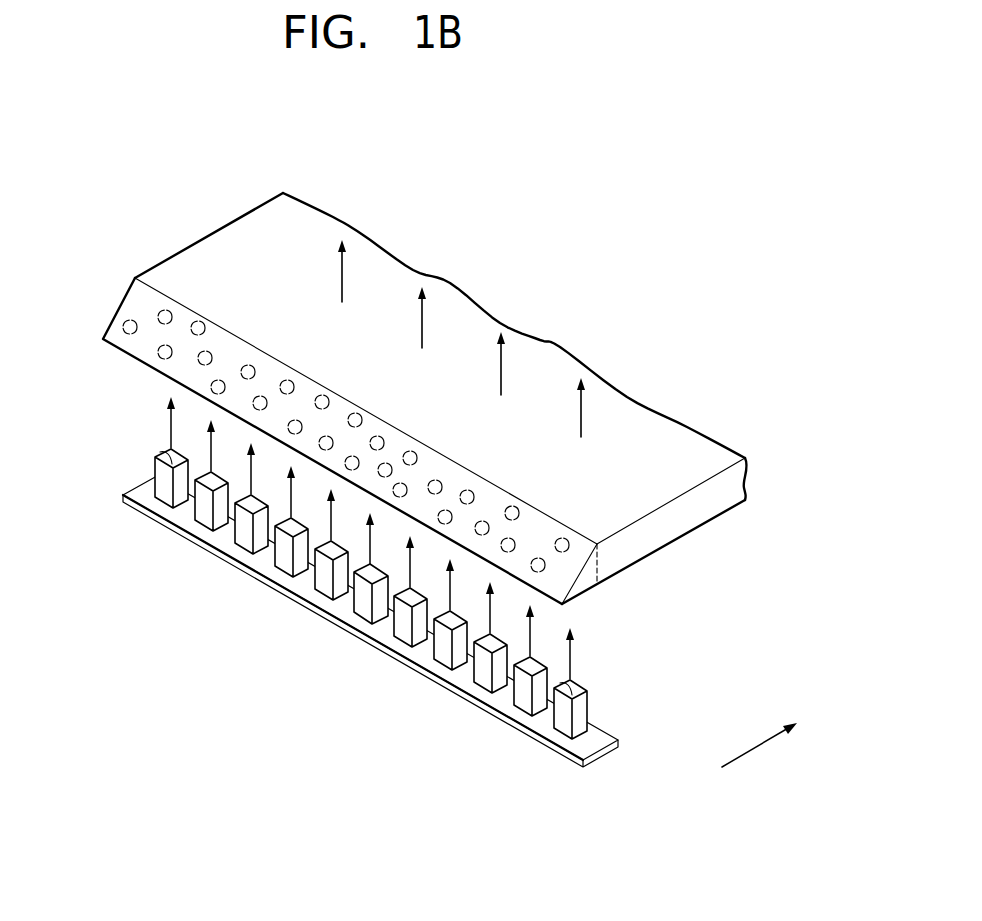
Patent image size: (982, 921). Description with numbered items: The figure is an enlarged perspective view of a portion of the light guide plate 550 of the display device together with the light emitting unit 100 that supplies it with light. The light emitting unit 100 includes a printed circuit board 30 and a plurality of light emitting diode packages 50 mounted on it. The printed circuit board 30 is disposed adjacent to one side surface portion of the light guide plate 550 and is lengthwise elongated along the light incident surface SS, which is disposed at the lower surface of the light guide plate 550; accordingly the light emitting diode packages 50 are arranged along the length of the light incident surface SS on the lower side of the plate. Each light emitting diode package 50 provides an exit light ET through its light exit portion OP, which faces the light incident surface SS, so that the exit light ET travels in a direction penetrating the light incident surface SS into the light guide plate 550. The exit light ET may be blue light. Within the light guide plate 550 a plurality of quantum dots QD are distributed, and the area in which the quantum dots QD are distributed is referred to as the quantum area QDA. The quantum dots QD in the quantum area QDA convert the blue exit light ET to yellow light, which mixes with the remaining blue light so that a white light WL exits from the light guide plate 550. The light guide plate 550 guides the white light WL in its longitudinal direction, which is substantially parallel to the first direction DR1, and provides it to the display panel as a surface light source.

The light guide plate 550 is at (642, 503).
The quantum dot QD is at (167, 311).
The light incident surface SS is at (150, 369).
The white light WL is at (583, 417).
The quantum area QDA is at (589, 587).
The exit light ET is at (170, 435).
The light exit portion OP is at (160, 452).
The light emitting diode package 50 is at (520, 700).
The printed circuit board 30 is at (543, 738).
The light emitting unit 100 is at (493, 799).
The first direction DR1 is at (778, 736).